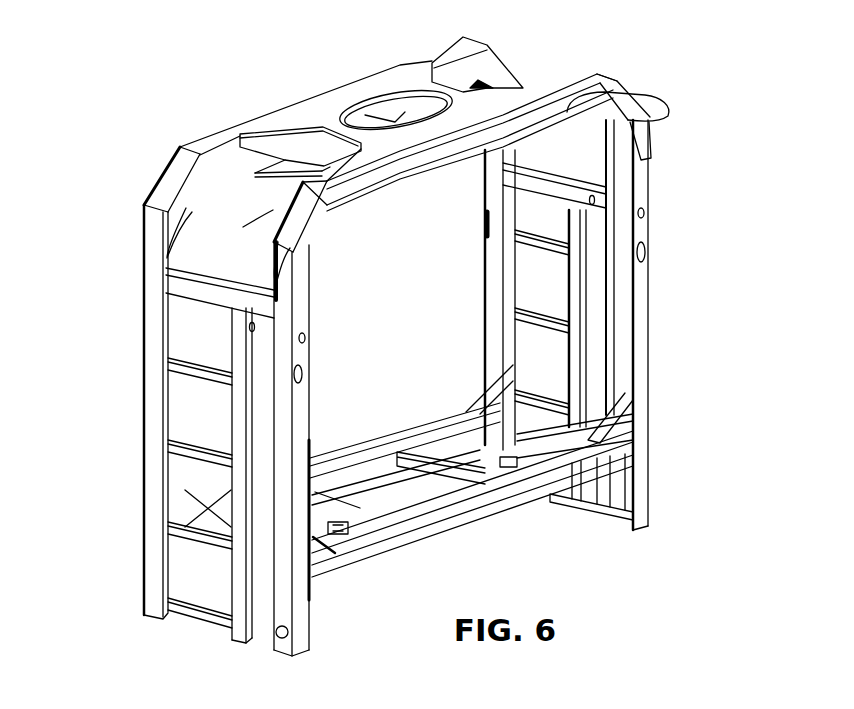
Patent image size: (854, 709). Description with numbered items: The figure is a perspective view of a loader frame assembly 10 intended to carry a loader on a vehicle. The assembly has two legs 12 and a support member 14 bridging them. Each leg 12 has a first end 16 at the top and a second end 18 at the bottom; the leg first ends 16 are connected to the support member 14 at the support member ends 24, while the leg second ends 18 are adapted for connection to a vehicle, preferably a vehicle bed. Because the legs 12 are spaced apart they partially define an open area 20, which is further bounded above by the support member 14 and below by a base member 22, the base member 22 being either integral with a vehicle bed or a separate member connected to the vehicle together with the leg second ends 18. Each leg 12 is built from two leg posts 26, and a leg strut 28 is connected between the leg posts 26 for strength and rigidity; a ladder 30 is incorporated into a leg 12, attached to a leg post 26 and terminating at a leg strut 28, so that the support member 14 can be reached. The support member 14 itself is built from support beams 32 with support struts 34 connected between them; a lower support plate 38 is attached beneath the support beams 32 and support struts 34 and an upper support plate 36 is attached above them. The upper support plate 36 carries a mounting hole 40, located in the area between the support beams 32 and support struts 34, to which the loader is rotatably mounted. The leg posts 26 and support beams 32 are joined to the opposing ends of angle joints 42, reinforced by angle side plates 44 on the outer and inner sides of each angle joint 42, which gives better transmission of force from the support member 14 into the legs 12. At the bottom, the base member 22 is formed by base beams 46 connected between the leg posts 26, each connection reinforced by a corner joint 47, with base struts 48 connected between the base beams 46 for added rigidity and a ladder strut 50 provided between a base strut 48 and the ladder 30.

The loader frame assembly 10 is at (712, 149).
The legs 12 is at (147, 581).
The support member 14 is at (441, 175).
The first ends 16 is at (304, 300).
The second ends 18 is at (307, 645).
The open area 20 is at (375, 358).
The base member 22 is at (350, 446).
The support member ends 24 is at (332, 205).
The leg posts 26 is at (150, 522).
The leg strut 28 is at (217, 300).
The ladder 30 is at (300, 384).
The support beams 32 is at (263, 165).
The support struts 34 is at (304, 143).
The upper support plate 36 is at (313, 107).
The lower support plate 38 is at (283, 169).
The mounting hole 40 is at (402, 96).
The angle joints 42 is at (167, 170).
The angle side plates 44 is at (143, 207).
The base beams 46 is at (397, 430).
The corner joint 47 is at (187, 505).
The base struts 48 is at (402, 462).
The ladder strut 50 is at (355, 522).